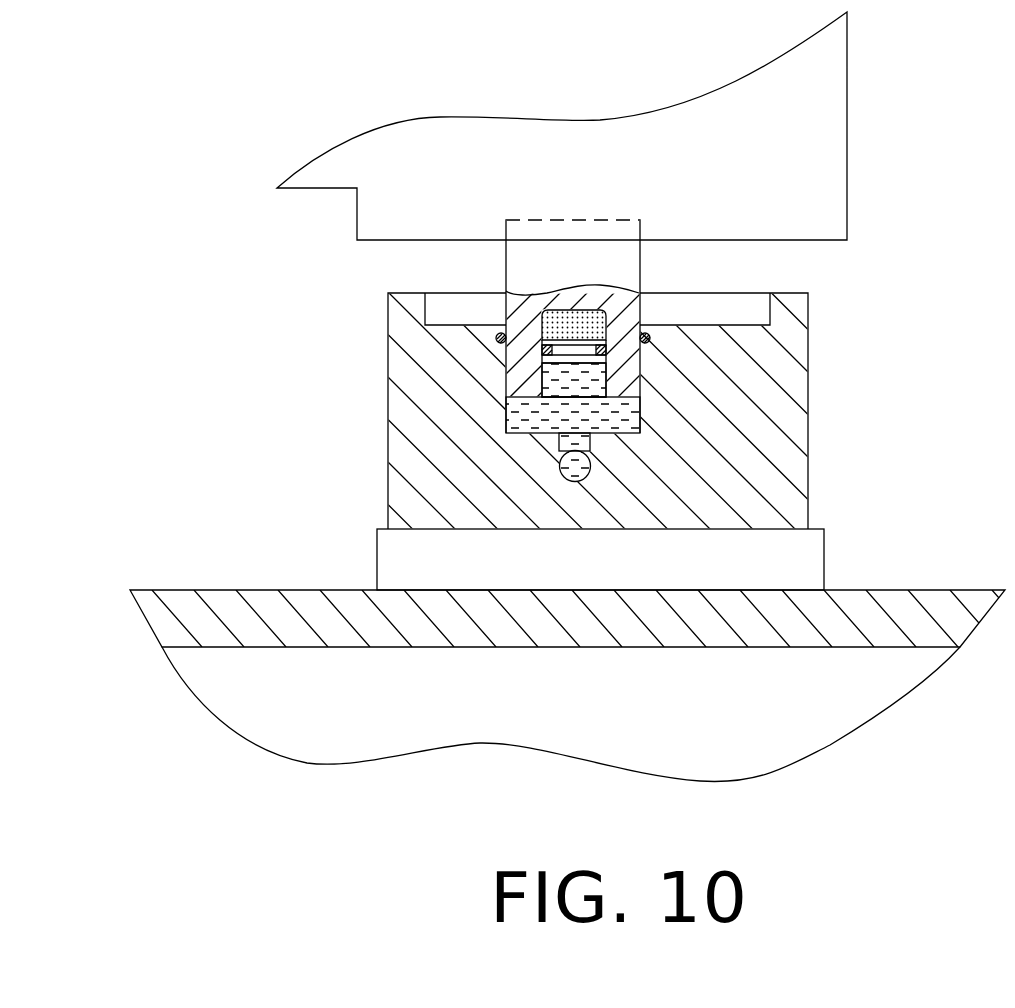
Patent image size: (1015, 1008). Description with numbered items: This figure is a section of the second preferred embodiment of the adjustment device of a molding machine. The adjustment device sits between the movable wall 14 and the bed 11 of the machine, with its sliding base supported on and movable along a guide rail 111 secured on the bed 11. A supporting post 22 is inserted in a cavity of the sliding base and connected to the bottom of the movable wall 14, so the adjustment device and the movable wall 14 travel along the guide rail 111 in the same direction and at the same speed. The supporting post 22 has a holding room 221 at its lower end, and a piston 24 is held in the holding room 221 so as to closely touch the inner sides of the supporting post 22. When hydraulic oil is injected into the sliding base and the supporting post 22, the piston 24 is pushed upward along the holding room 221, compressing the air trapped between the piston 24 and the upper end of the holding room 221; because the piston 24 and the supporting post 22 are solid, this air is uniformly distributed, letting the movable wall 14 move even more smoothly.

The bed 11 is at (933, 597).
The guide rail 111 is at (800, 548).
The movable wall 14 is at (816, 153).
The supporting post 22 is at (627, 266).
The holding room 221 is at (597, 373).
The piston 24 is at (545, 350).